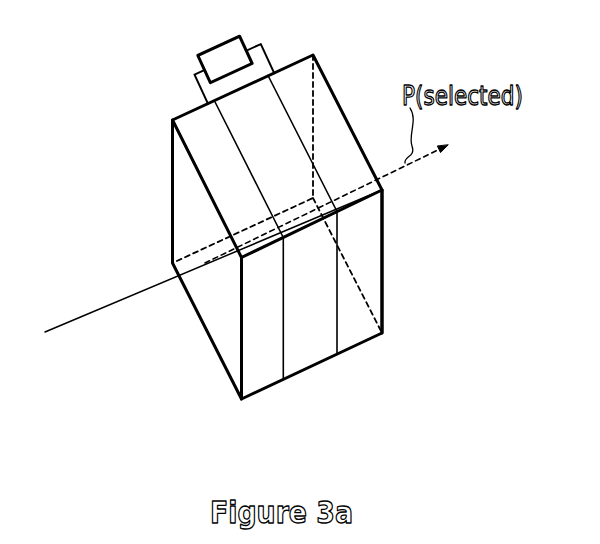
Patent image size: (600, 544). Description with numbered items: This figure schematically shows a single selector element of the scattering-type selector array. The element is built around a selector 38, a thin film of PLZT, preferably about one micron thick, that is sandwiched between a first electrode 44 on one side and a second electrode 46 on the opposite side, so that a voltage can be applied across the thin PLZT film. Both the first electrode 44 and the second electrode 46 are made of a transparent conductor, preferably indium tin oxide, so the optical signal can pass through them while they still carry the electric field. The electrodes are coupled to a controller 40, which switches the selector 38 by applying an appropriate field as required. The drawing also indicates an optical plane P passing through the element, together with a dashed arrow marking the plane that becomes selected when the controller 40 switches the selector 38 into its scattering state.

The selector 38 is at (313, 365).
The controller 40 is at (231, 67).
The first electrode 44 is at (235, 368).
The second electrode 46 is at (373, 292).
The plane P is at (122, 302).